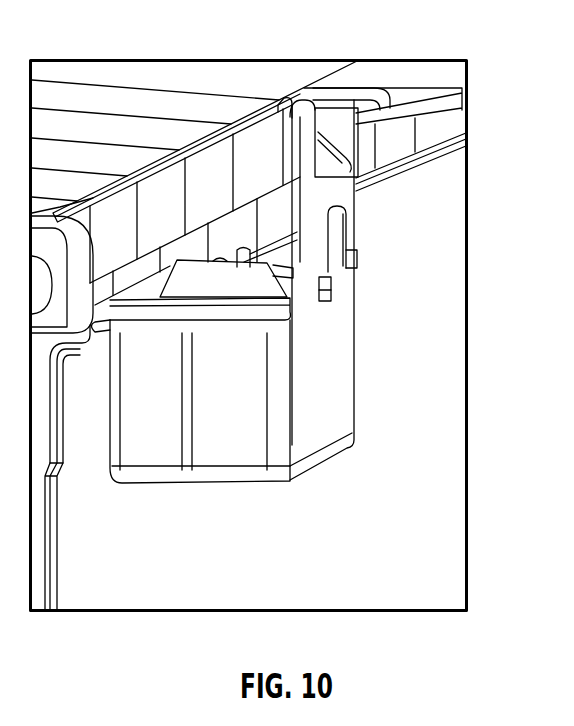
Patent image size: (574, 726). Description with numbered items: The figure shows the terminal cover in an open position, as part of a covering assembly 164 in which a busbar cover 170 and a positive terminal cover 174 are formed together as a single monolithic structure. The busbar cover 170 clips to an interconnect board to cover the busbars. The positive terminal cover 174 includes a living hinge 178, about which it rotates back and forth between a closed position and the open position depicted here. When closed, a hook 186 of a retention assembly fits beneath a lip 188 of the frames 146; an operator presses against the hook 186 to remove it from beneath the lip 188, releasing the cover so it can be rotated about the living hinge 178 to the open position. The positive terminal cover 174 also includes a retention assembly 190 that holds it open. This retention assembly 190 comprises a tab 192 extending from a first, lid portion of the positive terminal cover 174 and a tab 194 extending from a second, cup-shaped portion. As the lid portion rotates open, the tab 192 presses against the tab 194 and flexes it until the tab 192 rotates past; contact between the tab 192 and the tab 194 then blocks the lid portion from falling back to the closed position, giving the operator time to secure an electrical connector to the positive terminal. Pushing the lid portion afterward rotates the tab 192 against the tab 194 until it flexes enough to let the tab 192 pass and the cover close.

The frames 146 is at (115, 88).
The covering assembly 164 is at (395, 593).
The busbar cover 170 is at (434, 463).
The positive terminal cover 174 is at (337, 178).
The living hinge 178 is at (298, 265).
The hook 186 is at (364, 90).
The lip 188 is at (163, 267).
The retention assembly 190 is at (364, 249).
The tab 192 is at (320, 278).
The tab 194 is at (325, 299).